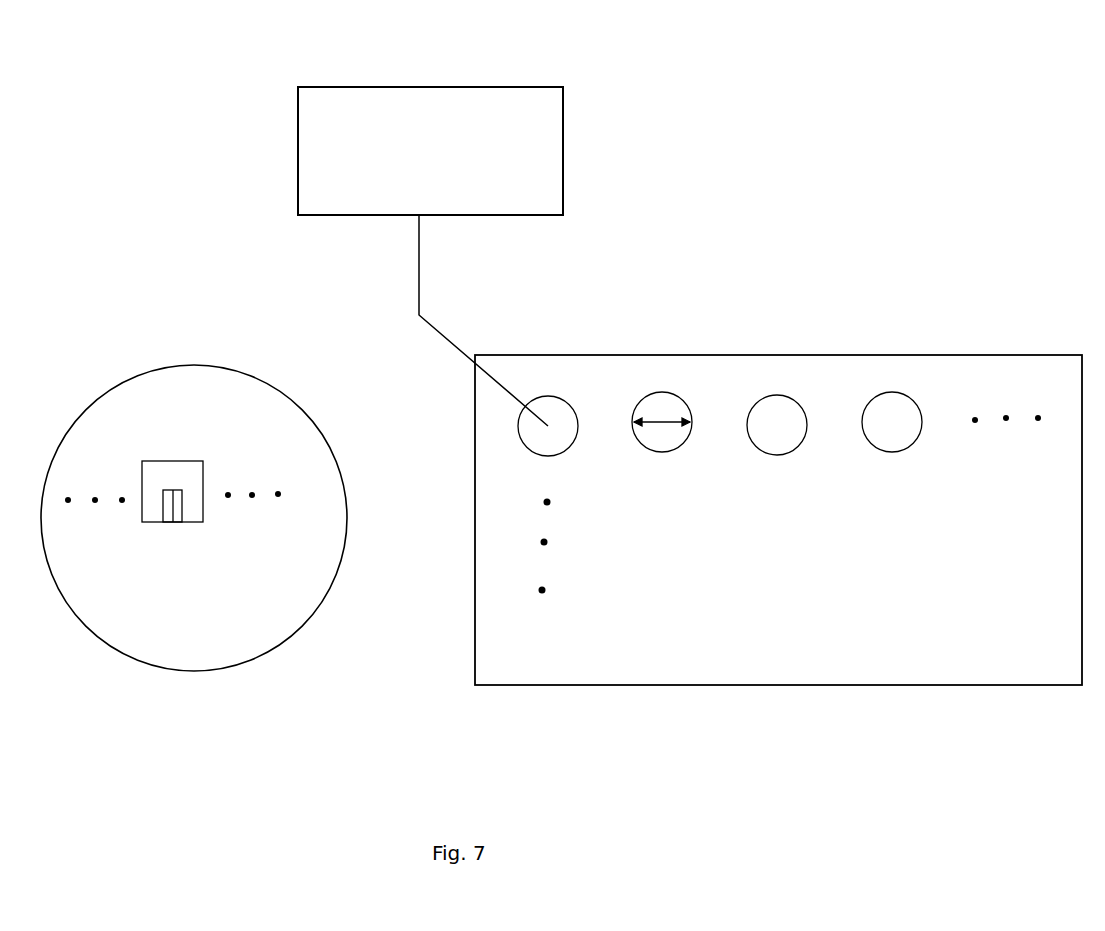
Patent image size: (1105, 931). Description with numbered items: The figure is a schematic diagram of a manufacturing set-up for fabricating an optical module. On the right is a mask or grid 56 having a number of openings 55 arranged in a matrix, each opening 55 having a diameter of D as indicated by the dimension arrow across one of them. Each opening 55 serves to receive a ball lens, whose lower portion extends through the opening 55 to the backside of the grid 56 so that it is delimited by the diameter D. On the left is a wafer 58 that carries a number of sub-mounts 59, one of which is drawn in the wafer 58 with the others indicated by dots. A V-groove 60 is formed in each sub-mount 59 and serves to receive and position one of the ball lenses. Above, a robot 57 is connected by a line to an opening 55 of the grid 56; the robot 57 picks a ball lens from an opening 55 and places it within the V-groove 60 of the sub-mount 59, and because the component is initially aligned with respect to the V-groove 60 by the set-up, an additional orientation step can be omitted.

The openings 55 is at (545, 393).
The mask or grid 56 is at (990, 352).
The robot 57 is at (452, 85).
The wafer 58 is at (173, 368).
The sub-mount 59 is at (173, 460).
The V-groove 60 is at (175, 522).